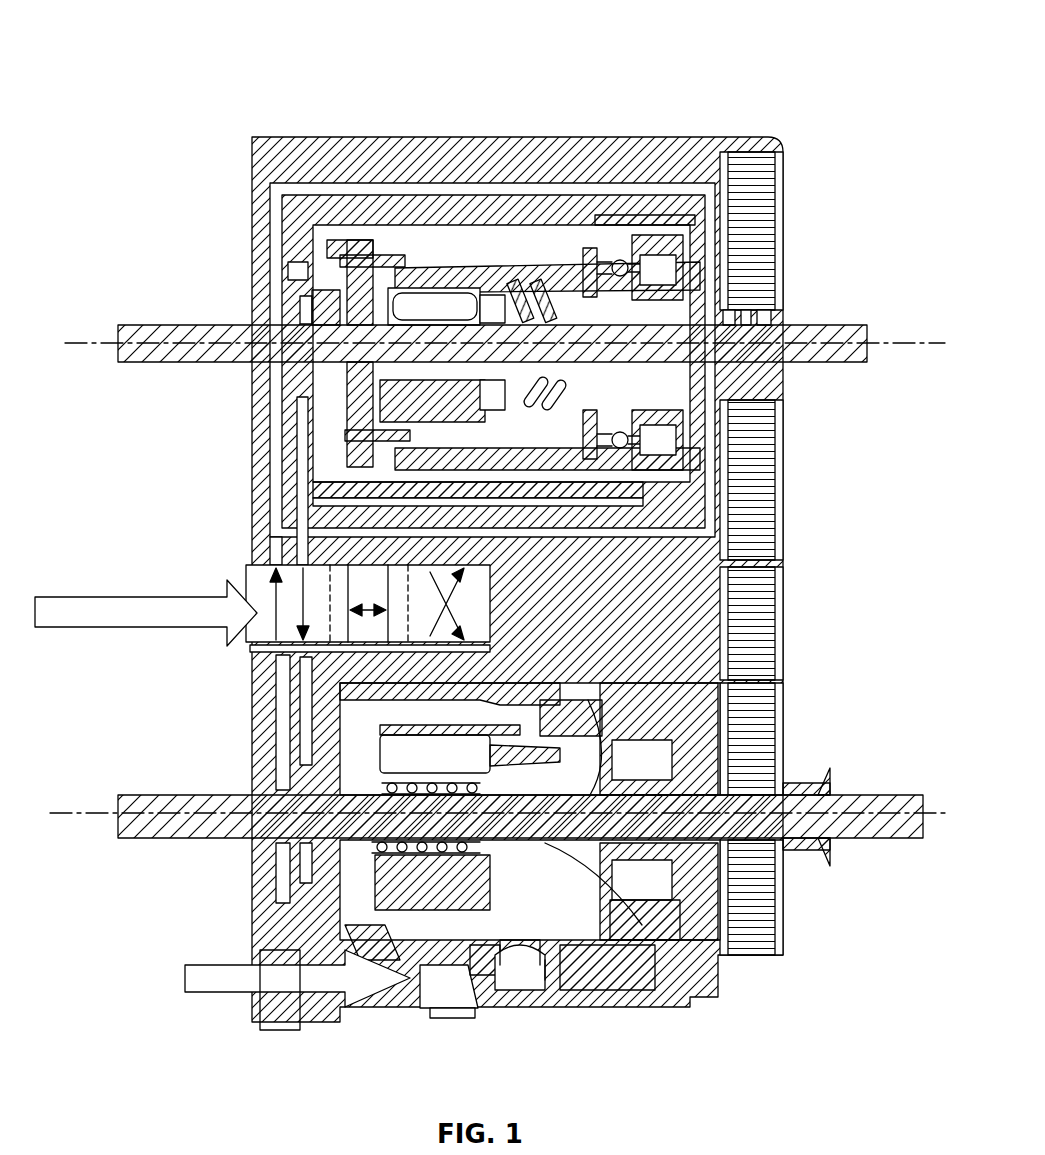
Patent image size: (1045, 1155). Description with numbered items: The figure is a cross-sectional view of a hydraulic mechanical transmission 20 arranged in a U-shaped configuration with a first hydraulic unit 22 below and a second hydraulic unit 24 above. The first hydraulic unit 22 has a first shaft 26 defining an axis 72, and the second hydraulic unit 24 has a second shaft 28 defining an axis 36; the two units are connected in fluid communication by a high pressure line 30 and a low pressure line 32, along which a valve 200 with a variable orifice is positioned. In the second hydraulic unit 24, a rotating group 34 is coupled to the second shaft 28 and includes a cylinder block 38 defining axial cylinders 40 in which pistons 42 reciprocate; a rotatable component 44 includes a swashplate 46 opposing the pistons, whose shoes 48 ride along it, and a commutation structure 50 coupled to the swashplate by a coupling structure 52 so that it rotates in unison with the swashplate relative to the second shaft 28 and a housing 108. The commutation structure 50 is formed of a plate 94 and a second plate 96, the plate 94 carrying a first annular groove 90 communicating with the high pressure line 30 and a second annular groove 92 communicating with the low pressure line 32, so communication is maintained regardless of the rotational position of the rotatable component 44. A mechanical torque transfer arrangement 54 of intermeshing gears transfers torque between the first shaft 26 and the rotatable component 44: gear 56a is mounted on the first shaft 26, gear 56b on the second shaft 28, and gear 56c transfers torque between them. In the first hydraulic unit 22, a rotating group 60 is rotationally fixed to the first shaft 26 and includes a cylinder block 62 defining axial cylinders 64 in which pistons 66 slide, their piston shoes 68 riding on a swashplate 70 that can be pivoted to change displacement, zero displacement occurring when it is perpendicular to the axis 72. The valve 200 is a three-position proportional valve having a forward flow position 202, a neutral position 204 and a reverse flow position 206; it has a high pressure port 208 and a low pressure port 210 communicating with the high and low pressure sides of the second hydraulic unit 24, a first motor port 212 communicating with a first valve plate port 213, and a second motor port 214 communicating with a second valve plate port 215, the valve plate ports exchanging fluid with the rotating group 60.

The hydraulic mechanical transmission 20 is at (838, 76).
The first hydraulic unit 22 is at (848, 874).
The second hydraulic unit 24 is at (806, 283).
The first shaft 26 is at (165, 845).
The second shaft 28 is at (118, 350).
The high pressure line 30 is at (276, 400).
The low pressure line 32 is at (302, 465).
The rotating group 34 is at (470, 298).
The axis 36 is at (925, 343).
The cylinder block 38 is at (448, 278).
The axial cylinders 40 is at (418, 390).
The pistons 42 is at (528, 285).
The rotatable component 44 is at (673, 235).
The swashplate 46 is at (545, 383).
The shoes 48 is at (590, 250).
The commutation structure 50 is at (363, 240).
The coupling structure 52 is at (505, 290).
The mechanical torque transfer arrangement 54 is at (806, 728).
The gear 56a is at (785, 887).
The gear 56b is at (785, 177).
The gear 56c is at (785, 597).
The rotating group 60 is at (450, 913).
The cylinder block 62 is at (507, 900).
The axial cylinders 64 is at (427, 757).
The pistons 66 is at (533, 905).
The piston shoes 68 is at (548, 895).
The swashplate 70 is at (635, 918).
The axis 72 is at (92, 803).
The first annular groove 90 is at (312, 292).
The second annular groove 92 is at (320, 318).
The plate 94 is at (327, 250).
The second plate 96 is at (400, 255).
The housing 108 is at (612, 205).
The valve 200 is at (522, 605).
The forward flow position 202 is at (234, 556).
The neutral position 204 is at (350, 690).
The reverse flow position 206 is at (310, 772).
The high pressure port 208 is at (303, 565).
The low pressure port 210 is at (280, 565).
The first motor port 212 is at (278, 654).
The first valve plate port 213 is at (320, 900).
The second motor port 214 is at (308, 658).
The second valve plate port 215 is at (313, 755).